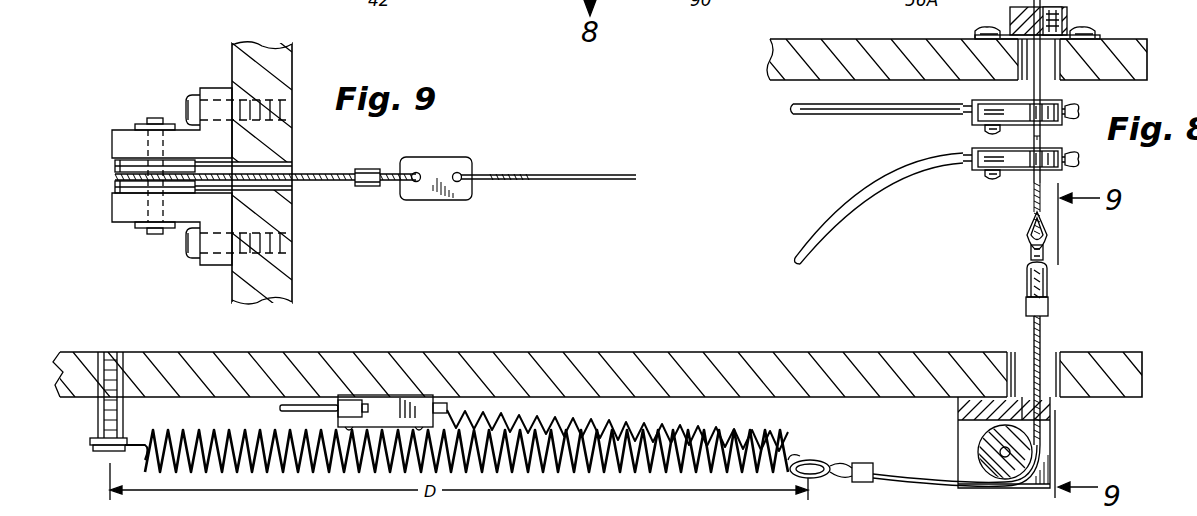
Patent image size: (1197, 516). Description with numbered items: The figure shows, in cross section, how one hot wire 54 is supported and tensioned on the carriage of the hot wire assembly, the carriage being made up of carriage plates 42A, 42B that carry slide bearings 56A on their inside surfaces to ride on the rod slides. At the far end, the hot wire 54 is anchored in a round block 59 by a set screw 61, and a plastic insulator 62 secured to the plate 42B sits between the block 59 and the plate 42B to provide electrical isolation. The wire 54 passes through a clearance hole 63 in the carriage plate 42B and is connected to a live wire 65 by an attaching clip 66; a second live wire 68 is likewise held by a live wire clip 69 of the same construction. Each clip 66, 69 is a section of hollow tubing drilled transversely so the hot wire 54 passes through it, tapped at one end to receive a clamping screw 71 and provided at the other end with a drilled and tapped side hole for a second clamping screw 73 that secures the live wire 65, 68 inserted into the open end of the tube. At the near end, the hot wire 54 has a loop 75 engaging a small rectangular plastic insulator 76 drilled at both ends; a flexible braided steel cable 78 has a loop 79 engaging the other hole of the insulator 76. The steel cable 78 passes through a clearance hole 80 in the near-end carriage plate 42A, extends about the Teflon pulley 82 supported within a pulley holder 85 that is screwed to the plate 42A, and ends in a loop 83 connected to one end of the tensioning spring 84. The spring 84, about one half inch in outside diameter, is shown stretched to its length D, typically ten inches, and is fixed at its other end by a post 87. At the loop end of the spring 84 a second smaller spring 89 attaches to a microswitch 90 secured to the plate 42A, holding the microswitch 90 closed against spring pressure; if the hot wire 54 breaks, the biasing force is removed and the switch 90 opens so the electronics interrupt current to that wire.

In FIG. 9, the carriage plate 42A is at (288, 70).
In FIG. 8, the carriage plate 42A is at (722, 352).
In FIG. 8, the carriage plate 42B is at (770, 59).
In FIG. 9, the hot wire 54 is at (598, 174).
In FIG. 8, the hot wire 54 is at (1045, 134).
In FIG. 8, the slide bearing 56A is at (1037, 37).
In FIG. 8, the round block 59 is at (1010, 12).
In FIG. 8, the set screw 61 is at (1062, 16).
In FIG. 8, the plastic insulator 62 is at (1096, 36).
In FIG. 8, the clearance hole 63 is at (1048, 74).
In FIG. 8, the live wire 65 is at (800, 105).
In FIG. 8, the attaching clip 66 is at (985, 100).
In FIG. 8, the second live wire 68 is at (850, 194).
In FIG. 8, the live wire clip 69 is at (1020, 172).
In FIG. 8, the clamping screw 71 is at (1080, 110).
In FIG. 8, the second clamping screw 73 is at (985, 130).
In FIG. 9, the loop 75 is at (490, 173).
In FIG. 8, the loop 75 is at (1028, 228).
In FIG. 9, the plastic insulator 76 is at (462, 157).
In FIG. 8, the plastic insulator 76 is at (1031, 252).
In FIG. 9, the flexible braided steel cable 78 is at (334, 172).
In FIG. 8, the flexible braided steel cable 78 is at (1030, 338).
In FIG. 9, the loop 79 is at (394, 170).
In FIG. 8, the loop 79 is at (1027, 285).
In FIG. 9, the clearance hole 80 is at (282, 191).
In FIG. 8, the clearance hole 80 is at (1056, 352).
In FIG. 9, the Teflon pulley 82 is at (115, 185).
In FIG. 8, the Teflon pulley 82 is at (978, 452).
In FIG. 8, the loop 83 is at (852, 467).
In FIG. 8, the tensioning spring 84 is at (262, 428).
In FIG. 9, the pulley holder 85 is at (185, 135).
In FIG. 8, the pulley holder 85 is at (958, 414).
In FIG. 8, the post 87 is at (100, 416).
In FIG. 8, the second smaller spring 89 is at (648, 432).
In FIG. 8, the microswitch 90 is at (390, 405).